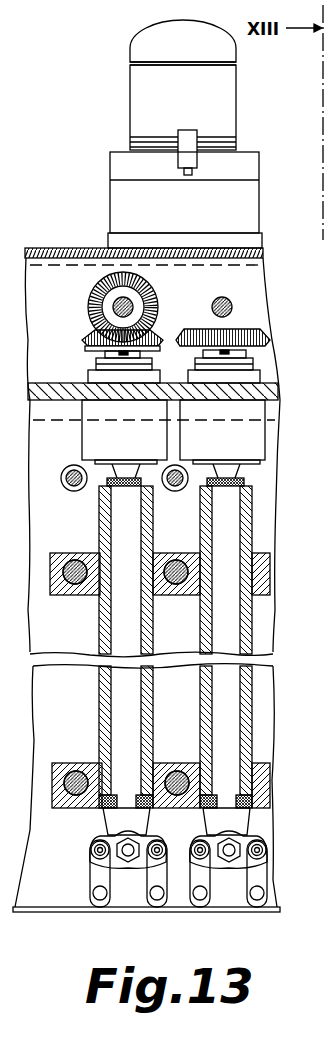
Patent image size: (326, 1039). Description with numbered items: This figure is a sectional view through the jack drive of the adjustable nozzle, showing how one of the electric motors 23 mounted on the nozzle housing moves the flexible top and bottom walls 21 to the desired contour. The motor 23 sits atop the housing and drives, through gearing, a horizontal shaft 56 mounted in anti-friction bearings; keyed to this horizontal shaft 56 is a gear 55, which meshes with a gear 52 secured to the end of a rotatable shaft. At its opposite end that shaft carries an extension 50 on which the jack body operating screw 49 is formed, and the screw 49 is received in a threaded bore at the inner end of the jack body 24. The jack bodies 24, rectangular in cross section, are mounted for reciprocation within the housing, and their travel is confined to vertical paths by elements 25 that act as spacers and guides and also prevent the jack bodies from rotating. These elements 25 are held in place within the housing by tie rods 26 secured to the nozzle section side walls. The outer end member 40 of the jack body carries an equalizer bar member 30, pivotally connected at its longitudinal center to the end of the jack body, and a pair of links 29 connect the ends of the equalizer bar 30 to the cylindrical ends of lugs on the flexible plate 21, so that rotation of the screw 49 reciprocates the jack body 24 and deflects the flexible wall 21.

The flexible top and bottom walls 21 is at (80, 912).
The electric motor 23 is at (191, 103).
The jack body 24 is at (104, 689).
The spacer and guide element 25 is at (91, 596).
The tie rod 26 is at (97, 553).
The link 29 is at (106, 878).
The equalizer bar member 30 is at (213, 833).
The outer end member 40 is at (243, 822).
The jack body operating screw 49 is at (100, 485).
The shaft extension 50 is at (232, 472).
The gear 52 is at (86, 345).
The gear 55 is at (97, 288).
The horizontal shaft 56 is at (220, 297).